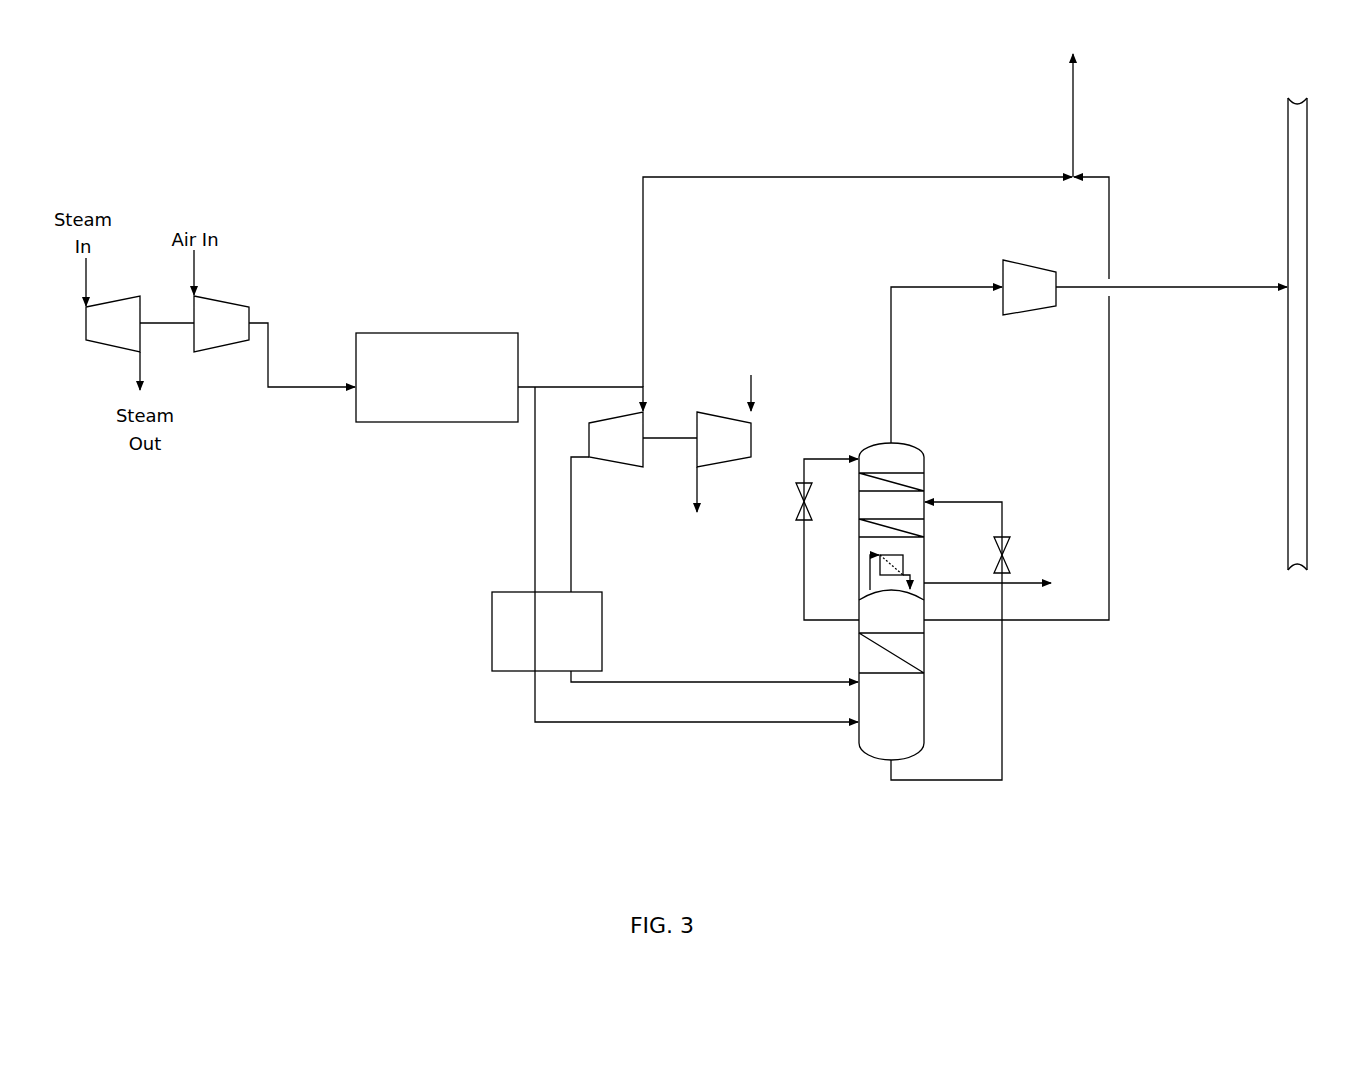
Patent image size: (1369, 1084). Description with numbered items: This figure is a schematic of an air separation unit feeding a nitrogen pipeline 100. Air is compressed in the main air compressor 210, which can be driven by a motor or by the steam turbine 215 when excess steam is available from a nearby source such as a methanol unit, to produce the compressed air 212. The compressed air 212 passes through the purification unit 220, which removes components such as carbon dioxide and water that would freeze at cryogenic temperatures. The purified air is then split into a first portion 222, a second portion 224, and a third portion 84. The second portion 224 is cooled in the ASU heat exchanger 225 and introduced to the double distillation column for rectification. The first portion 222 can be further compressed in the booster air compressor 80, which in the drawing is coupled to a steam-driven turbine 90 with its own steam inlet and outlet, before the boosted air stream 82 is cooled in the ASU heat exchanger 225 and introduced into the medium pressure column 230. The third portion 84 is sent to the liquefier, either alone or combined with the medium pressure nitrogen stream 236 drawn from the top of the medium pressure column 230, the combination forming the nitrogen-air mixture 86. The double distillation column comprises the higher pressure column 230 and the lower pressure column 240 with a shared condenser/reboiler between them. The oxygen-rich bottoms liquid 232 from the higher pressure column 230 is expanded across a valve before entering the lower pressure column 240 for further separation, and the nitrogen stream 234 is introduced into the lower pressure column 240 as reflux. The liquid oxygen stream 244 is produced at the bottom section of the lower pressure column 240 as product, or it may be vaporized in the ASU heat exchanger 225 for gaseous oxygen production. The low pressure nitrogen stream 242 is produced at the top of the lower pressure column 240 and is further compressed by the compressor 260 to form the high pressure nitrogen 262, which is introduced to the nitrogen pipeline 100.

The nitrogen pipeline 100 is at (1308, 245).
The steam turbine 215 is at (113, 324).
The main air compressor 210 is at (221, 324).
The compressed air 212 is at (340, 384).
The purification unit 220 is at (425, 333).
The first portion 222 is at (622, 386).
The second portion 224 is at (533, 507).
The ASU heat exchanger 225 is at (492, 619).
The booster air compressor 80 is at (634, 502).
The steam turbine 90 is at (722, 442).
The expanded air line 82 is at (690, 681).
The third portion of the compressed air stream 84 is at (790, 177).
The nitrogen-air mixture 86 is at (1075, 118).
The medium pressure column 230 is at (925, 693).
The bottoms liquid 232 is at (988, 780).
The nitrogen stream 234 is at (804, 543).
The medium pressure nitrogen stream 236 is at (1108, 468).
The lower pressure column 240 is at (925, 565).
The low pressure nitrogen stream 242 is at (893, 405).
The liquid oxygen stream 244 is at (1018, 583).
The compressor 260 is at (1029, 287).
The high pressure nitrogen 262 is at (1230, 287).